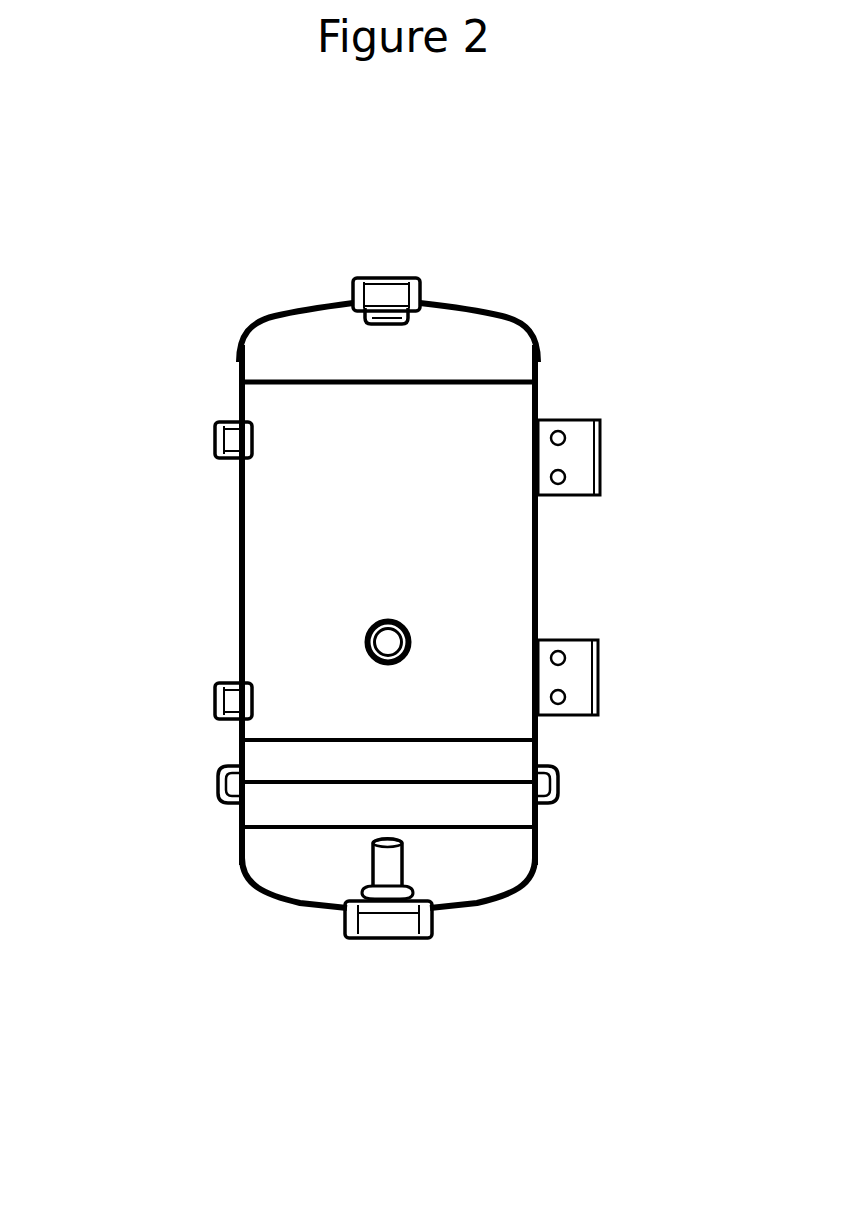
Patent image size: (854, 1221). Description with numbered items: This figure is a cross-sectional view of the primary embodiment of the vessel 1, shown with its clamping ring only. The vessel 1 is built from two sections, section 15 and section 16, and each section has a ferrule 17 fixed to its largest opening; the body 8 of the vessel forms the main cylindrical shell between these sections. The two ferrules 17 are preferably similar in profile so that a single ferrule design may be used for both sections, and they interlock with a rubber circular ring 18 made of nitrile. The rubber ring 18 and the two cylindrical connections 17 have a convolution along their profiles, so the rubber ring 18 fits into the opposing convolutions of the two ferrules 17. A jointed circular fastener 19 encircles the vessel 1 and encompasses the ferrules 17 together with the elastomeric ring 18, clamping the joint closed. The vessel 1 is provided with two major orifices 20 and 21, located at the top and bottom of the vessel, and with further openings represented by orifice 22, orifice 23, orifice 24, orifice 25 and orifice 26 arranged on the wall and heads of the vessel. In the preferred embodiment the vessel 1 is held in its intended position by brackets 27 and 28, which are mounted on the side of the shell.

The vessel 1 is at (218, 303).
The cylindrical shell 8 is at (531, 545).
The section 15 is at (239, 637).
The section 16 is at (240, 876).
The ferrule 17 is at (541, 753).
The rubber circular ring 18 is at (560, 785).
The jointed circular fastener 19 is at (219, 770).
The major orifice 20 is at (387, 278).
The major orifice 21 is at (387, 941).
The orifice 22 is at (216, 440).
The orifice 23 is at (216, 698).
The orifice 24 is at (255, 608).
The orifice 25 is at (528, 346).
The orifice 26 is at (527, 894).
The bracket 27 is at (601, 457).
The bracket 28 is at (600, 646).